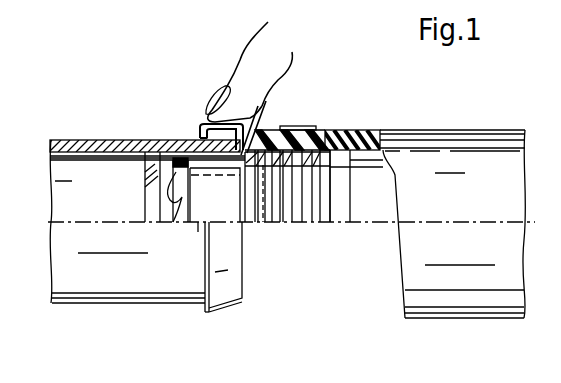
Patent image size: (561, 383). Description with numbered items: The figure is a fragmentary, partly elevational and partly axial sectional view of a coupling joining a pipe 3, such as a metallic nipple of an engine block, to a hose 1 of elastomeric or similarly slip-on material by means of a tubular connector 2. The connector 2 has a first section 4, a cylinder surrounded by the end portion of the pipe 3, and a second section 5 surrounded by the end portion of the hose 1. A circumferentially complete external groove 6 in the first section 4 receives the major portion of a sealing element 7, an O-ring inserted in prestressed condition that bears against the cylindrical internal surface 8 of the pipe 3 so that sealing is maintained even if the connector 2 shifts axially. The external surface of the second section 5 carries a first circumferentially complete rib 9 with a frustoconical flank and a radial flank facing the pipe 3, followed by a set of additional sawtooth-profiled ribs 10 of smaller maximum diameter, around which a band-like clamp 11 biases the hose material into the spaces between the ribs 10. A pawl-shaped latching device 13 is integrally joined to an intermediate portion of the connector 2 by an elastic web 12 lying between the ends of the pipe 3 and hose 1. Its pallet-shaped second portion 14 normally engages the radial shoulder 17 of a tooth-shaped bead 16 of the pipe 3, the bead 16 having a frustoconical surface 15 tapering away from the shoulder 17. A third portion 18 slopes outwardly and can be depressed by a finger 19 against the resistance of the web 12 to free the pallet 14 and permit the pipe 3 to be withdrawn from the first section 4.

The hose 1 is at (440, 131).
The connector 2 is at (262, 226).
The pipe 3 is at (131, 138).
The first section 4 is at (197, 226).
The second section 5 is at (303, 226).
The external groove 6 is at (180, 220).
The sealing element 7 is at (160, 180).
The internal surface 8 is at (121, 160).
The first rib 9 is at (346, 129).
The additional ribs 10 is at (331, 203).
The clamp 11 is at (294, 128).
The web 12 is at (232, 141).
The latching device 13 is at (199, 123).
The pallet-shaped second portion 14 is at (199, 137).
The frustoconical surface 15 is at (228, 306).
The bead 16 is at (205, 313).
The shoulder 17 is at (204, 306).
The third portion 18 is at (260, 110).
The finger 19 is at (247, 52).